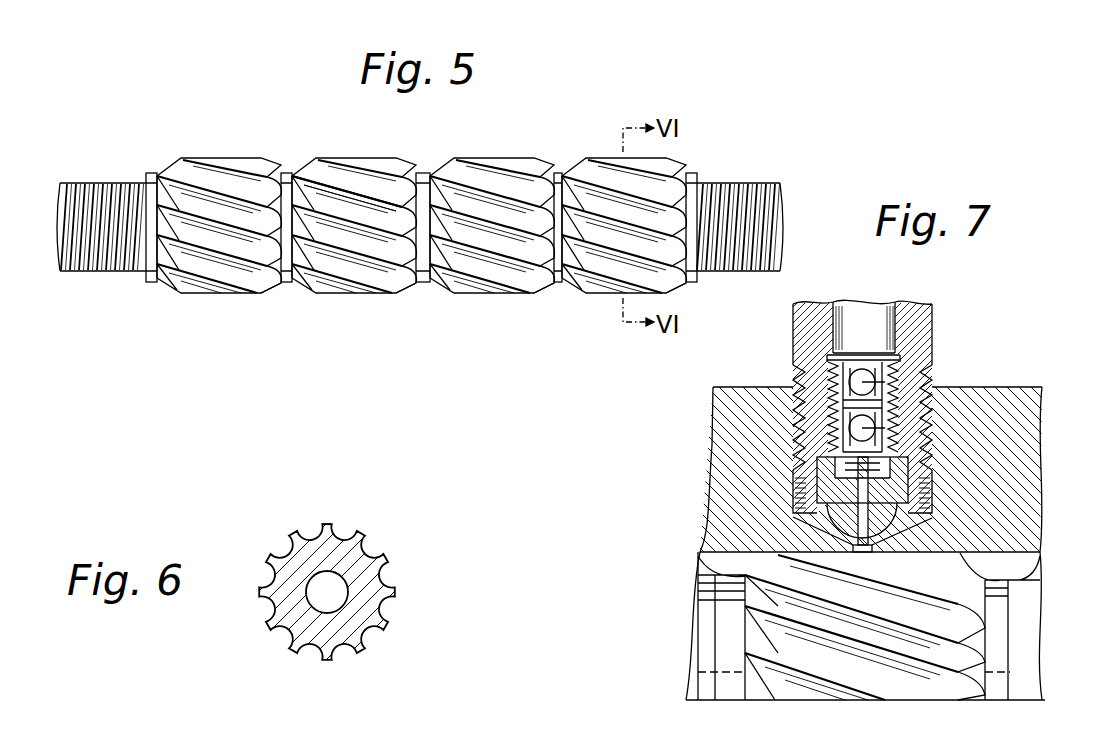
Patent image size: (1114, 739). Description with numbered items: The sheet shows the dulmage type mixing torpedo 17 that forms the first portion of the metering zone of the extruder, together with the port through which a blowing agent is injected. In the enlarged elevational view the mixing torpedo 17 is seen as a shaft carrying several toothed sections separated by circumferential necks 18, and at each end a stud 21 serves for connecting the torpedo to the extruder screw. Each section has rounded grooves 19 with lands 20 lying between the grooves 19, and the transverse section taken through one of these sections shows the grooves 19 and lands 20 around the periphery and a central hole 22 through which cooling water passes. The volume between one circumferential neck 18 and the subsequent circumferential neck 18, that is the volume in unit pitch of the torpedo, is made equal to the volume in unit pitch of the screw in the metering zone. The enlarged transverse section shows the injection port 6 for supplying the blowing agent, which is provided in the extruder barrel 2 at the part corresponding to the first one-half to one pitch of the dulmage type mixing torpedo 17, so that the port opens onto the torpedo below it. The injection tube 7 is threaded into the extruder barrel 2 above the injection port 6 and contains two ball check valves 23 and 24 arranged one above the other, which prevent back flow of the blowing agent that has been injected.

In FIG. 7, the extruder barrel 2 is at (1020, 440).
In FIG. 7, the injection port 6 is at (880, 548).
In FIG. 7, the injection tube 7 is at (920, 326).
In FIG. 5, the dulmage type mixing torpedo 17 is at (221, 160).
In FIG. 7, the dulmage type mixing torpedo 17 is at (957, 620).
In FIG. 5, the circumferential neck 18 is at (288, 173).
In FIG. 5, the rounded groove 19 is at (334, 187).
In FIG. 6, the rounded groove 19 is at (317, 538).
In FIG. 5, the land 20 is at (381, 186).
In FIG. 6, the land 20 is at (332, 524).
In FIG. 5, the stud 21 is at (103, 183).
In FIG. 6, the hole 22 is at (337, 588).
In FIG. 7, the ball check valve 23 is at (928, 362).
In FIG. 7, the ball check valve 24 is at (867, 432).